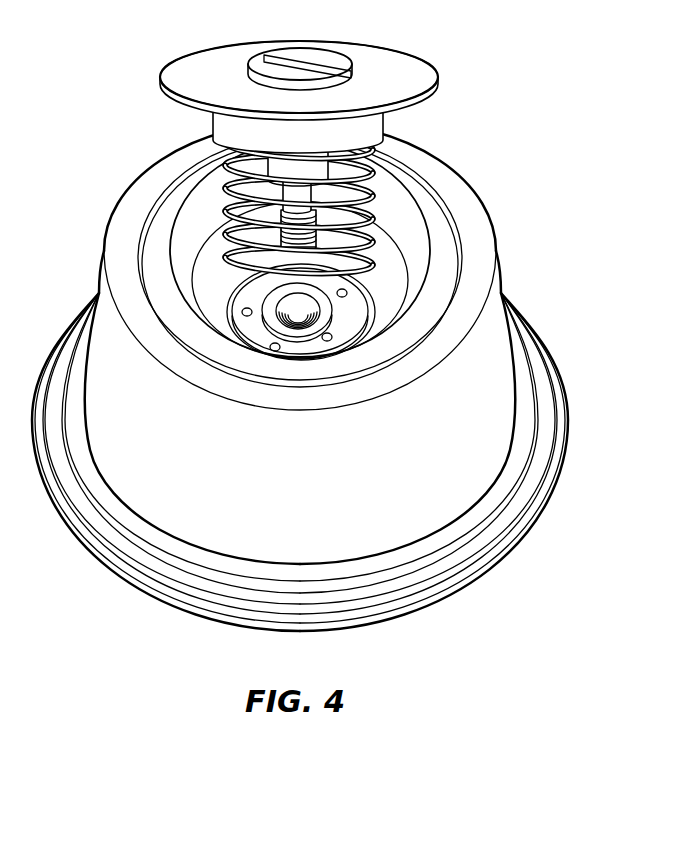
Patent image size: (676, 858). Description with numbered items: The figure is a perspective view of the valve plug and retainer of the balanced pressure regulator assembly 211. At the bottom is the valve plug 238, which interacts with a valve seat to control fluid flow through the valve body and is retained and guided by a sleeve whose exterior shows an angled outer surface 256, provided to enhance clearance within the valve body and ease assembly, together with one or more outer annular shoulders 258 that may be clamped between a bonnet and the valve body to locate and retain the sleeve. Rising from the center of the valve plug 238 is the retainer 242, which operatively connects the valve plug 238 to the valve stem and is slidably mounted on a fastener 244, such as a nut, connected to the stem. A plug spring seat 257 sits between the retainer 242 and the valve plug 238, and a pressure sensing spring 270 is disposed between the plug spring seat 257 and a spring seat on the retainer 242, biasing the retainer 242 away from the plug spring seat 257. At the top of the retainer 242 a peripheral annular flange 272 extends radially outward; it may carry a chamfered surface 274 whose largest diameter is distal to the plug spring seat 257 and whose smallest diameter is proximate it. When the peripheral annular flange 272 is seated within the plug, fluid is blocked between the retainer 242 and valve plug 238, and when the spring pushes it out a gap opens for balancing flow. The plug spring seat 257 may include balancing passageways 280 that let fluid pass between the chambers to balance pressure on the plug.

The balanced pressure regulator assembly 211 is at (570, 76).
The valve plug 238 is at (440, 222).
The retainer 242 is at (225, 55).
The fastener 244 is at (323, 57).
The angled outer surface 256 is at (493, 334).
The plug spring seat 257 is at (435, 212).
The outer annular shoulders 258 is at (523, 387).
The pressure sensing spring 270 is at (395, 247).
The peripheral annular flange 272 is at (421, 72).
The chamfered surface 274 is at (177, 105).
The balancing passageways 280 is at (330, 333).